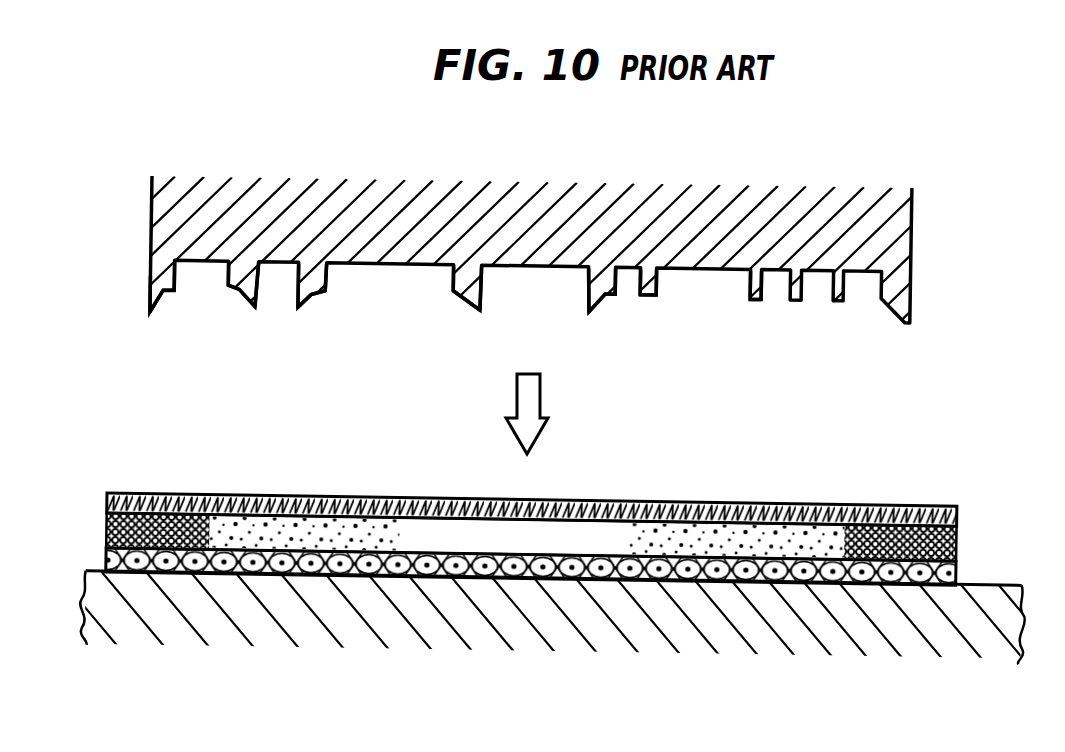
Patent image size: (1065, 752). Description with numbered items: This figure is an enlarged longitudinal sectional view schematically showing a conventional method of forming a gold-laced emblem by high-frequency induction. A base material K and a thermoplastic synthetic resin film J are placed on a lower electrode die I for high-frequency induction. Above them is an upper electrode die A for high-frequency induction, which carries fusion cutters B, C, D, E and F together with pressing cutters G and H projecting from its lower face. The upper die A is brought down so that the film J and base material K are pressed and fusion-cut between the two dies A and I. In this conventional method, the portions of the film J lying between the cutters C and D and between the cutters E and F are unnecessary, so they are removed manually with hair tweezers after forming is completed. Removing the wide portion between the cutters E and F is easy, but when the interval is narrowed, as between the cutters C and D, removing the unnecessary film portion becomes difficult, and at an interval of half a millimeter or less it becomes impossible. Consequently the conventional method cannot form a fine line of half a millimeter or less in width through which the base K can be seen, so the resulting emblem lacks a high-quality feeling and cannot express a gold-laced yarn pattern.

The electrode die for high-frequency-induction A is at (790, 207).
The fusion cutter B is at (152, 306).
The fusion cutter C is at (259, 297).
The fusion cutter D is at (310, 290).
The fusion cutter E is at (476, 288).
The fusion cutter F is at (600, 300).
The pressing cutter G is at (655, 292).
The pressing cutter H is at (755, 291).
The electrode die for high-frequency-induction I is at (964, 627).
The thermoplastic synthetic resin film J is at (922, 494).
The base material K is at (961, 560).